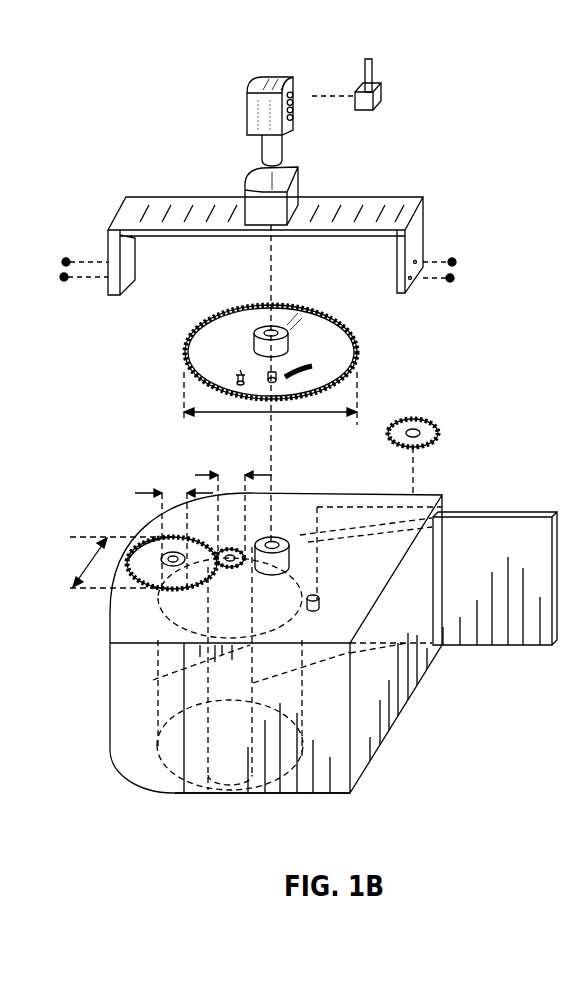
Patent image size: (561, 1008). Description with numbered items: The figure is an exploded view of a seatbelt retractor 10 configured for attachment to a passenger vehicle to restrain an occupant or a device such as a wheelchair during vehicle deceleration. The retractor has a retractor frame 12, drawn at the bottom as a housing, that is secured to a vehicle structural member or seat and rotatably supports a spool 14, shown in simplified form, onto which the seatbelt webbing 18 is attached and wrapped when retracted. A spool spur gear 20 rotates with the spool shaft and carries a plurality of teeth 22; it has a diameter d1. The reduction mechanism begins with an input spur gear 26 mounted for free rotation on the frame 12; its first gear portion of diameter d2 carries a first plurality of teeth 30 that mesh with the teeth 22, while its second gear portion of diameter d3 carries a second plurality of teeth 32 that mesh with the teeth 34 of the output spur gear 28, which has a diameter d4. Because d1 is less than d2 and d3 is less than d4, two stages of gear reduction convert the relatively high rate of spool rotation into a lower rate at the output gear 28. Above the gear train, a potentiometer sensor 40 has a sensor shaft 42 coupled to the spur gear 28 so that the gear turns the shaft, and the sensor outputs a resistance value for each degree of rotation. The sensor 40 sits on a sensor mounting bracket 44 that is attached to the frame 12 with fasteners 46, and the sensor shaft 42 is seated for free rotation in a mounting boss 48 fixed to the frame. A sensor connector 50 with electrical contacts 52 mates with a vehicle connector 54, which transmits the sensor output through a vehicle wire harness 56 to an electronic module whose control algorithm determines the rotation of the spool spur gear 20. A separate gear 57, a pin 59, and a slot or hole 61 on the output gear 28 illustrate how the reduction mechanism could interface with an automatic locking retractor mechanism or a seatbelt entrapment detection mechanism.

The seatbelt retractor 10 is at (108, 745).
The retractor frame 12 is at (287, 795).
The spool 14 is at (188, 799).
The seatbelt webbing 18 is at (513, 516).
The spool spur gear 20 is at (243, 570).
The teeth 22 is at (310, 613).
The spur gear 26 is at (150, 540).
The spur gear 28 is at (212, 352).
The first plurality of teeth 30 is at (133, 572).
The second plurality of teeth 32 is at (180, 568).
The teeth 34 is at (357, 340).
The sensor 40 is at (270, 61).
The sensor shaft 42 is at (259, 147).
The sensor mounting bracket 44 is at (398, 205).
The fasteners 46 is at (62, 258).
The mounting boss 48 is at (279, 538).
The sensor connector 50 is at (305, 105).
The electrical contacts 52 is at (294, 98).
The vehicle connector 54 is at (382, 86).
The vehicle wire harness 56 is at (374, 68).
The gear 57 is at (441, 429).
The pin 59 is at (238, 370).
The slot or hole 61 is at (302, 360).
The diameter of spool spur gear d1 is at (198, 475).
The diameter of first gear portion d2 is at (90, 562).
The diameter of second gear portion d3 is at (137, 493).
The diameter of spur gear 28 d4 is at (342, 415).